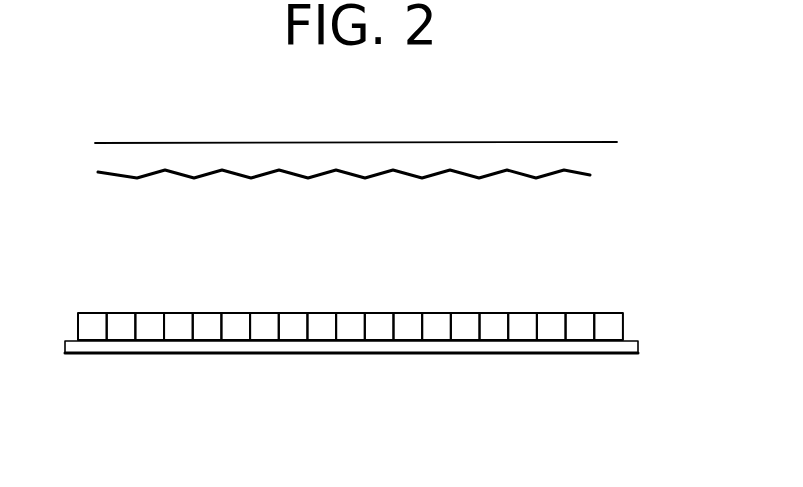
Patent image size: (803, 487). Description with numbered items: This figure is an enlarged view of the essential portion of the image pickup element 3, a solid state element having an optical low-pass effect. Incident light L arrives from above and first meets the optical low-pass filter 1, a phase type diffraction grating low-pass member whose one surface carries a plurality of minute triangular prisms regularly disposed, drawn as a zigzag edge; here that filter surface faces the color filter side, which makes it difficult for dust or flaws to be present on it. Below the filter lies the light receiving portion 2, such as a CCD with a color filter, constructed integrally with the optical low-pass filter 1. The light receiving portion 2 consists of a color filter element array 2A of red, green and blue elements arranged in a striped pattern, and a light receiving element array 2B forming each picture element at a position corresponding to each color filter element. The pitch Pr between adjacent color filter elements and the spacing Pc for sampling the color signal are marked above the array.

The optical low-pass filter 1 is at (598, 157).
The light receiving portion 2 is at (406, 302).
The color filter element array 2A is at (392, 289).
The light receiving element array 2B is at (638, 347).
The image pickup element 3 is at (588, 298).
The incident light L is at (335, 63).
The pitch between adjacent color filters Pr is at (433, 313).
The color signal sampling spacing Pc is at (548, 283).